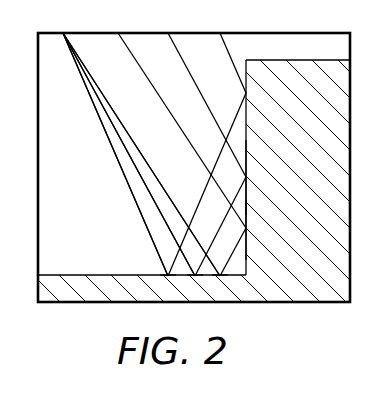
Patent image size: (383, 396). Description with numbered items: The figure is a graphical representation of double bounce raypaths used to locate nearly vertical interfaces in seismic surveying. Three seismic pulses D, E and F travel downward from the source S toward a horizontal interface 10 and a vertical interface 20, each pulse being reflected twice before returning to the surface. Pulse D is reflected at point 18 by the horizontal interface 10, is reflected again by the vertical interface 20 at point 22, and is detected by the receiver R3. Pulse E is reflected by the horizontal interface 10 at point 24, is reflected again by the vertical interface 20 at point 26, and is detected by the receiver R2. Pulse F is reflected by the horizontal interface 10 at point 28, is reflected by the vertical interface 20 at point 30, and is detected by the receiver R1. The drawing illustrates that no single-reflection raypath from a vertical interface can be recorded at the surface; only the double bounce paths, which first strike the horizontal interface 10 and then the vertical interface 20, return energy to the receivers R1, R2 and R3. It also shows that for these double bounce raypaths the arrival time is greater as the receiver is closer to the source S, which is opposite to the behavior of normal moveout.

The horizontal interface 10 is at (91, 273).
The reflection point 18 is at (168, 277).
The vertical interface 20 is at (248, 62).
The reflection point 22 is at (246, 93).
The reflection point 24 is at (193, 277).
The reflection point 26 is at (246, 177).
The reflection point 28 is at (221, 277).
The reflection point 30 is at (247, 224).
The source S is at (138, 144).
The receiver R1 is at (178, 144).
The receiver R2 is at (204, 144).
The receiver R3 is at (207, 144).
The seismic pulse D is at (110, 142).
The seismic pulse E is at (127, 152).
The seismic pulse F is at (142, 156).